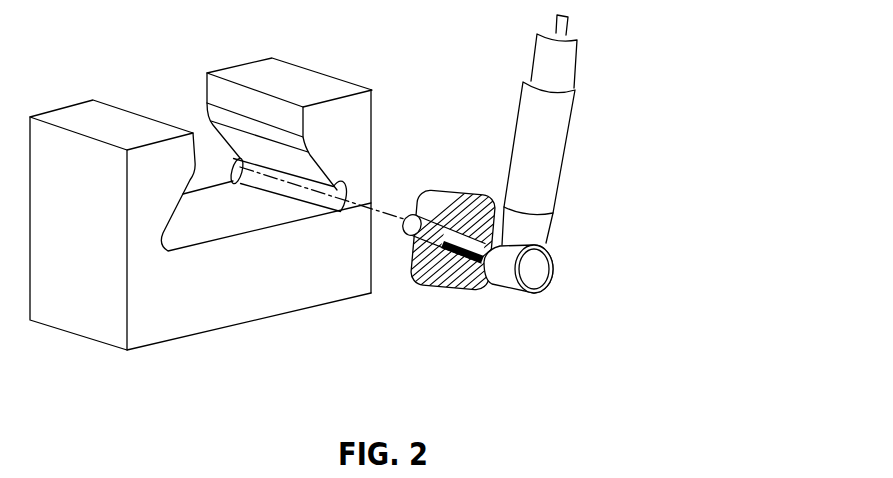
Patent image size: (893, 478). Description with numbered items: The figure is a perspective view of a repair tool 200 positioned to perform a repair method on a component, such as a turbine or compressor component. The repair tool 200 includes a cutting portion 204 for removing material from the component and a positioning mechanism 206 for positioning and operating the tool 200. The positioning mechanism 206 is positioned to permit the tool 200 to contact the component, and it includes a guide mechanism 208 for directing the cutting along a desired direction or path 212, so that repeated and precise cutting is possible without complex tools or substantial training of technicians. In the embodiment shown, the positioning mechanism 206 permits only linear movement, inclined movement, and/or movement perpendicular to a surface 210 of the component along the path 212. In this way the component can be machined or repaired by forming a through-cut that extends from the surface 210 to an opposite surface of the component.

The repair tool 200 is at (621, 115).
The cutting portion 204 is at (404, 203).
The positioning mechanism 206 is at (542, 320).
The guide mechanism 208 is at (450, 310).
The surface 210 is at (265, 268).
The path 212 is at (355, 198).